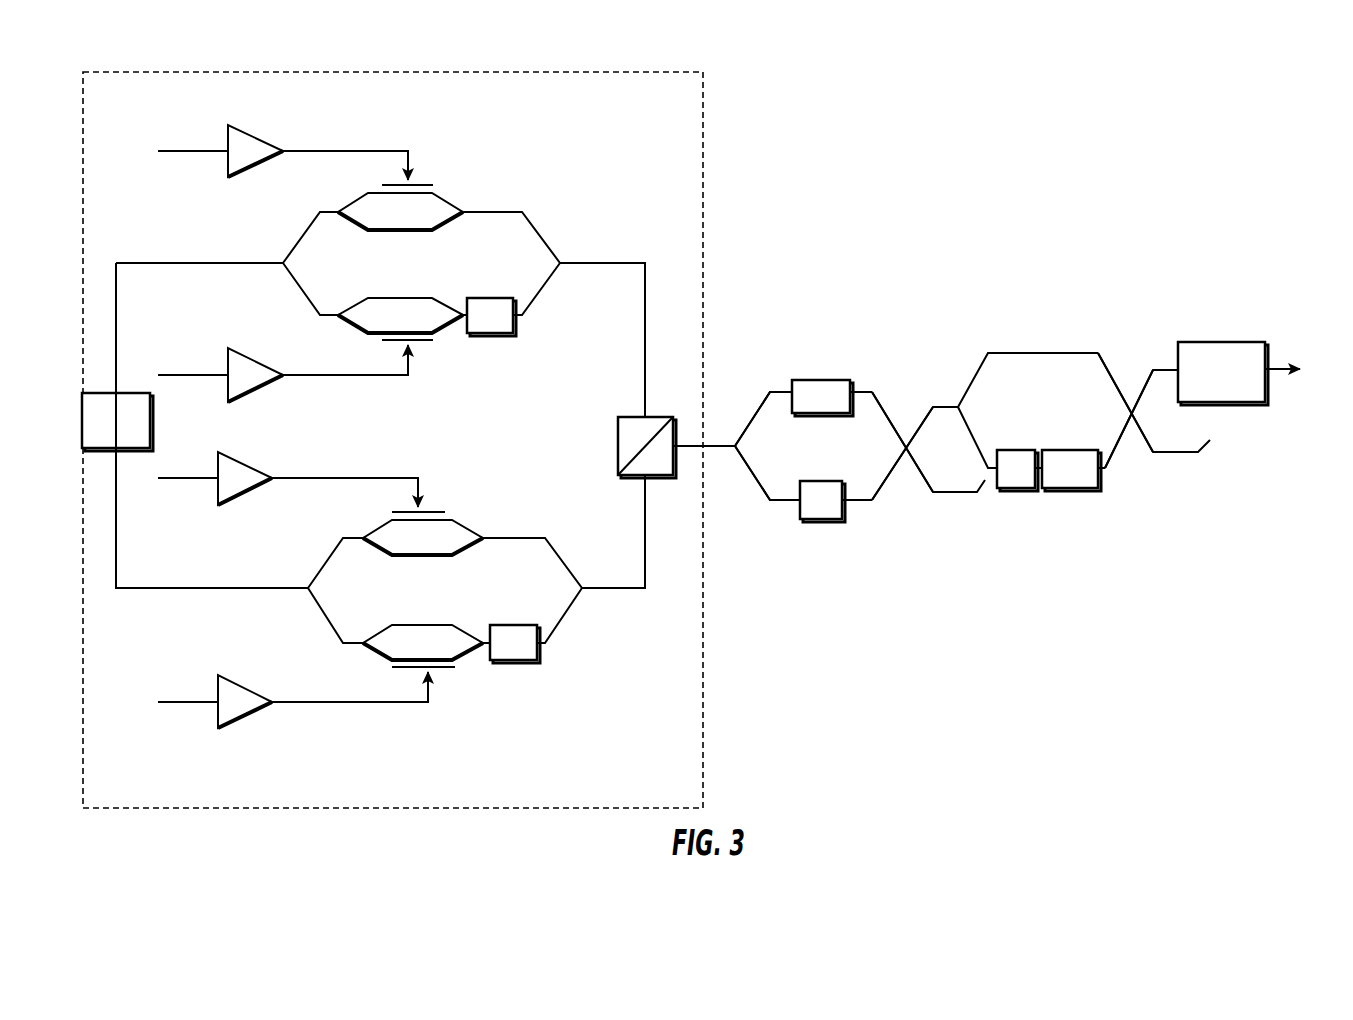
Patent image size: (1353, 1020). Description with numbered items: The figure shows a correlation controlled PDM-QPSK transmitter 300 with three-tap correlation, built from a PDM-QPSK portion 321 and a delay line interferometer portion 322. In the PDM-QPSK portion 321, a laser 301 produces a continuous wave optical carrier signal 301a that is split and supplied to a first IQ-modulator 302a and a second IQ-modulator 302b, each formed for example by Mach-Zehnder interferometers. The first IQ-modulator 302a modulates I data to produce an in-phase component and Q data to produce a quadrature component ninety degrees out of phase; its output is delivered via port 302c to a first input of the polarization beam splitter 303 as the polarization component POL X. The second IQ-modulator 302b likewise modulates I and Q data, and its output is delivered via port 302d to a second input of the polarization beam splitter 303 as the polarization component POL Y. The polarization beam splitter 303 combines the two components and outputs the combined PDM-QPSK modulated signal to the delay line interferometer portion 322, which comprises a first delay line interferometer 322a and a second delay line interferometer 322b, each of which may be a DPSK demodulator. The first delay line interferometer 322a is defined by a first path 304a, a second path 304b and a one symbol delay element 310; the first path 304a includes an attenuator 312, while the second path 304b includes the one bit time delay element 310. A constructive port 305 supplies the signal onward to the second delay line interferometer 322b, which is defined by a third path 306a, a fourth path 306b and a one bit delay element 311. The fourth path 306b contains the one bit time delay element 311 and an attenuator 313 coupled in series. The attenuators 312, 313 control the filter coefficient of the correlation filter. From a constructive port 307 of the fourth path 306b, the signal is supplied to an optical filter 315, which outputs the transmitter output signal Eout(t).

The transmitter 300 is at (986, 35).
The PDM-QPSK portion 321 is at (703, 113).
The laser 301 is at (150, 415).
The continuous wave optical carrier signal 301a is at (116, 322).
The first IQ-modulator 302a is at (450, 166).
The second IQ-modulator 302b is at (430, 728).
The port 302c is at (576, 272).
The port 302d is at (606, 588).
The polarization beam splitter 303 is at (657, 417).
The first path 304a is at (770, 395).
The second path 304b is at (770, 503).
The constructive port 305 is at (921, 410).
The third path 306a is at (1010, 353).
The fourth path 306b is at (980, 437).
The constructive port 307 is at (1143, 371).
The one bit time delay element 310 is at (845, 520).
The one bit time delay element 311 is at (1022, 488).
The attenuator 312 is at (840, 413).
The attenuator 313 is at (1078, 488).
The optical filter 315 is at (1222, 342).
The delay line interferometer portion 322 is at (956, 595).
The first delay line interferometer 322a is at (859, 347).
The second delay line interferometer 322b is at (1054, 320).